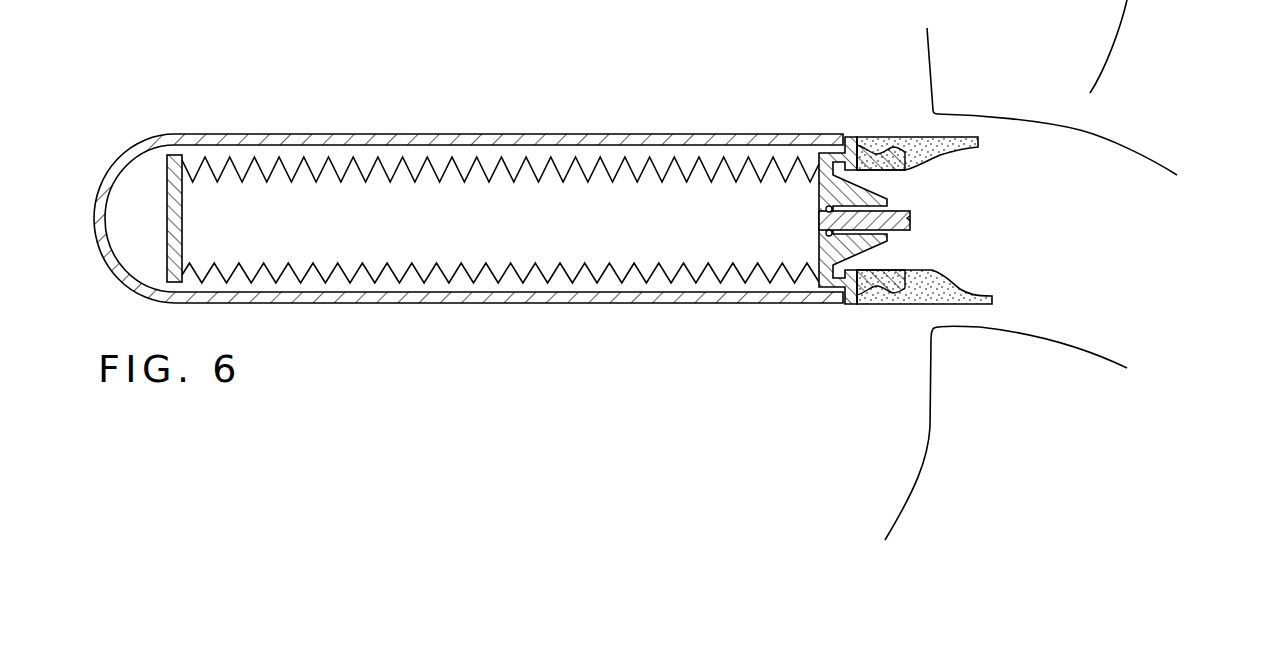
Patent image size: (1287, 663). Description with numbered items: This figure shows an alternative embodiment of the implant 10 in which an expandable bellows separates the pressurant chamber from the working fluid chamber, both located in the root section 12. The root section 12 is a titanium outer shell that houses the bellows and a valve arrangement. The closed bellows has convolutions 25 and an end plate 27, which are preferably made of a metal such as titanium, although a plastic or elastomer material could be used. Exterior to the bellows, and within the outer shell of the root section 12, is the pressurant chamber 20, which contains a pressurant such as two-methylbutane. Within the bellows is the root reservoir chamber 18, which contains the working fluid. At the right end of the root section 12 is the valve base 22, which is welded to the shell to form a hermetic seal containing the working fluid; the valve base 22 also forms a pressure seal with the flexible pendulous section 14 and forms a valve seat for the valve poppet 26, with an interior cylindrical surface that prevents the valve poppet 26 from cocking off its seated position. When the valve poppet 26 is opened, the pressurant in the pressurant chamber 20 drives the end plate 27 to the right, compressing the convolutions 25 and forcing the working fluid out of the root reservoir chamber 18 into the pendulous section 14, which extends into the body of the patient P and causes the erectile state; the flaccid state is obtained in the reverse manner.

The end cap assembly 10 is at (912, 184).
The root section 12 is at (423, 134).
The pendulous section 14 is at (978, 307).
The root reservoir chamber 18 is at (521, 230).
The pressurant chamber 20 is at (148, 225).
The valve base 22 is at (818, 255).
The convolutions 25 is at (275, 164).
The valve poppet 26 is at (820, 222).
The end plate 27 is at (182, 232).
The patient body P is at (1110, 137).